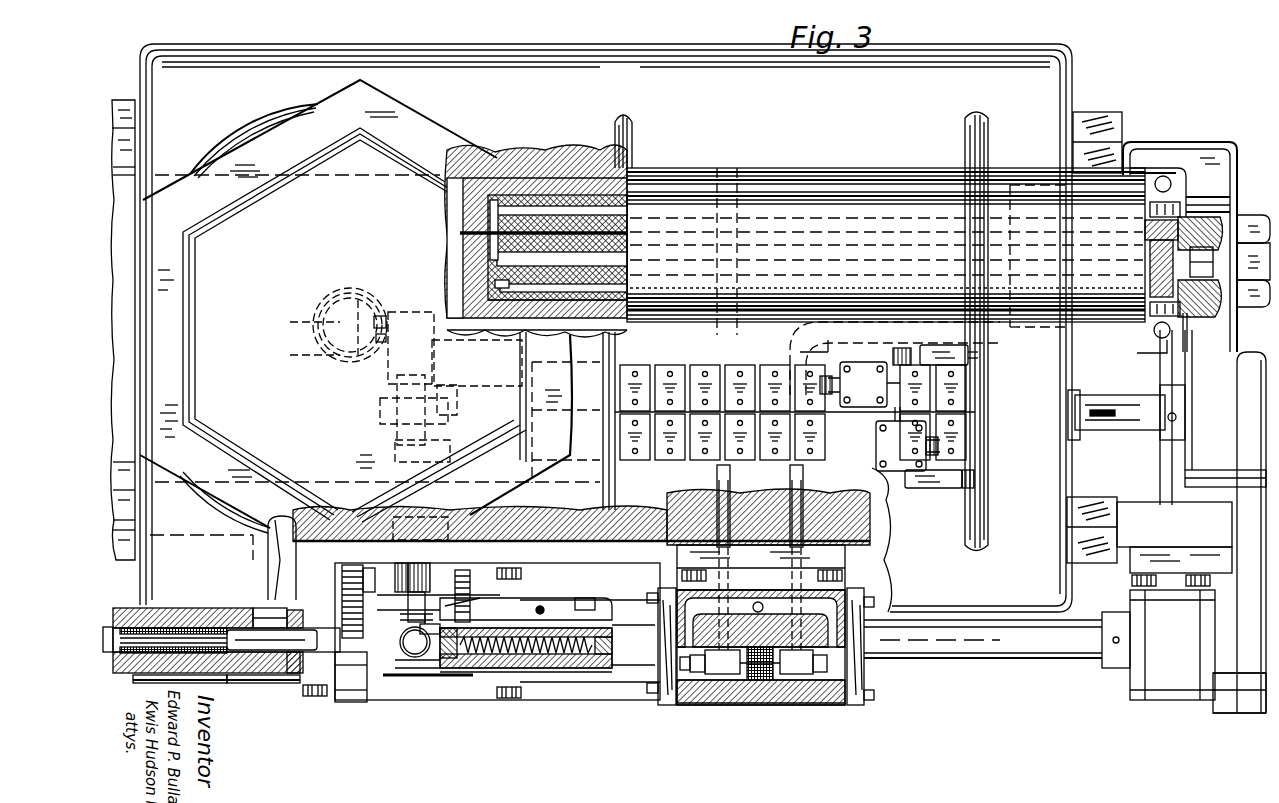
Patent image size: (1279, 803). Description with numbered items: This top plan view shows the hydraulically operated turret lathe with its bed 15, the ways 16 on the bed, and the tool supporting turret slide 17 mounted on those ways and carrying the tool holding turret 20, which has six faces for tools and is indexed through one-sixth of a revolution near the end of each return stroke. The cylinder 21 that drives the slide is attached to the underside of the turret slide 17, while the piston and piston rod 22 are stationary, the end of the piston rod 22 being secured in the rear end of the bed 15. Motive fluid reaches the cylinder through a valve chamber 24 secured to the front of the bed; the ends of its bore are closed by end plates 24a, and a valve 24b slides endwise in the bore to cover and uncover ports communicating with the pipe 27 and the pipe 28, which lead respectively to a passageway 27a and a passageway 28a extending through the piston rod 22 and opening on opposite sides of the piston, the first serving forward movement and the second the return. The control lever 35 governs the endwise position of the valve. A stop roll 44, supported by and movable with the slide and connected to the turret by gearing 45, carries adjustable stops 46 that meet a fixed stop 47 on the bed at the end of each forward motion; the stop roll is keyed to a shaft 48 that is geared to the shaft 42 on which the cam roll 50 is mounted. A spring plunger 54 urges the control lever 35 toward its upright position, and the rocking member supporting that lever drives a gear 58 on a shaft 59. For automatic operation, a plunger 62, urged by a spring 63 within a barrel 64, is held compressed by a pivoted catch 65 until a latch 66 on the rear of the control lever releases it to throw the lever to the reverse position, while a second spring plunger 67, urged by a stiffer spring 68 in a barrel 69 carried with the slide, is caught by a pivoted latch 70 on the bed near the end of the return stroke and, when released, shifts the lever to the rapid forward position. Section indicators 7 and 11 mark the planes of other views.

The section line 7- 7 is at (340, 407).
The section line 11- 11 is at (1172, 110).
The bed 15 is at (1202, 150).
The ways 16 is at (130, 100).
The turret slide 17 is at (622, 78).
The tool holding turret 20 is at (410, 136).
The cylinder 21 is at (1100, 325).
The piston and piston rod 22 is at (1238, 213).
The valve chamber 24 is at (818, 702).
The end plates 24a is at (665, 692).
The valve 24b is at (700, 703).
The pipe 27 is at (803, 488).
The passageway 27a is at (622, 312).
The pipe 28 is at (722, 488).
The passageway 28a is at (598, 200).
The control lever 35 is at (422, 668).
The shaft 42 is at (1025, 658).
The stop roll 44 is at (745, 380).
The gearing 45 is at (400, 415).
The stops 46 is at (935, 348).
The fixed stop 47 is at (380, 358).
The shaft 48 is at (1128, 425).
The cam roll 50 is at (420, 660).
The spring plunger 54 is at (440, 600).
The gear 58 is at (345, 575).
The shaft 59 is at (283, 575).
The plunger 62 is at (455, 670).
The spring 63 is at (580, 668).
The barrel 64 is at (552, 668).
The pivoted catch 65 is at (560, 602).
The latch 66 is at (408, 627).
The second spring plunger 67 is at (212, 612).
The spring 68 is at (185, 630).
The barrel 69 is at (164, 620).
The pivoted latch 70 is at (298, 603).